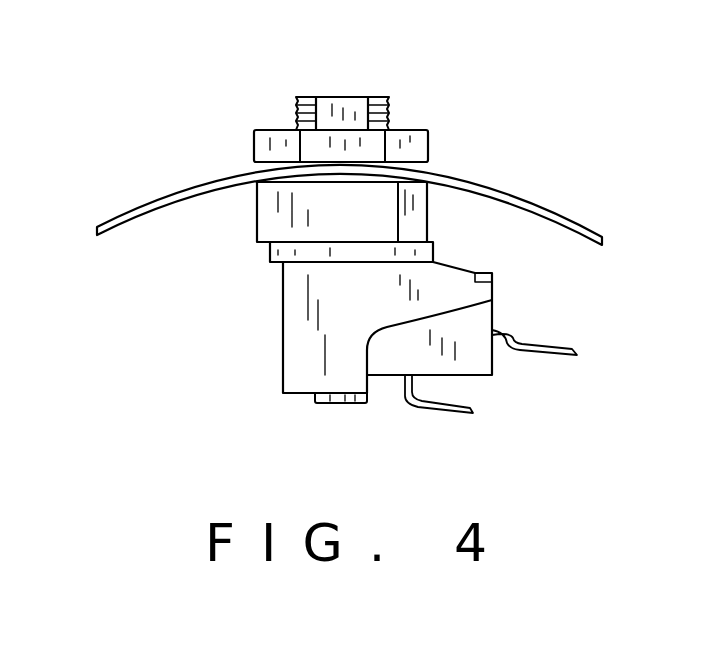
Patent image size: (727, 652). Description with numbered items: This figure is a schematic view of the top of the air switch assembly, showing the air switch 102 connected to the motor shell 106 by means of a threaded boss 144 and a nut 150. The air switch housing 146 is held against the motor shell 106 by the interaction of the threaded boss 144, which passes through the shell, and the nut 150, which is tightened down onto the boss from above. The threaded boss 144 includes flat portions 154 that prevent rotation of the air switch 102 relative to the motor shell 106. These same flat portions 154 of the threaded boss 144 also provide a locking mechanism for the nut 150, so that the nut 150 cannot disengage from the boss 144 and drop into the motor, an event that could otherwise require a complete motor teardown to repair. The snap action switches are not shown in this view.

The air switch 102 is at (282, 320).
The motor shell 106 is at (165, 200).
The threaded boss 144 is at (302, 97).
The air switch housing 146 is at (285, 220).
The nut 150 is at (433, 143).
The flat portions 154 is at (341, 96).